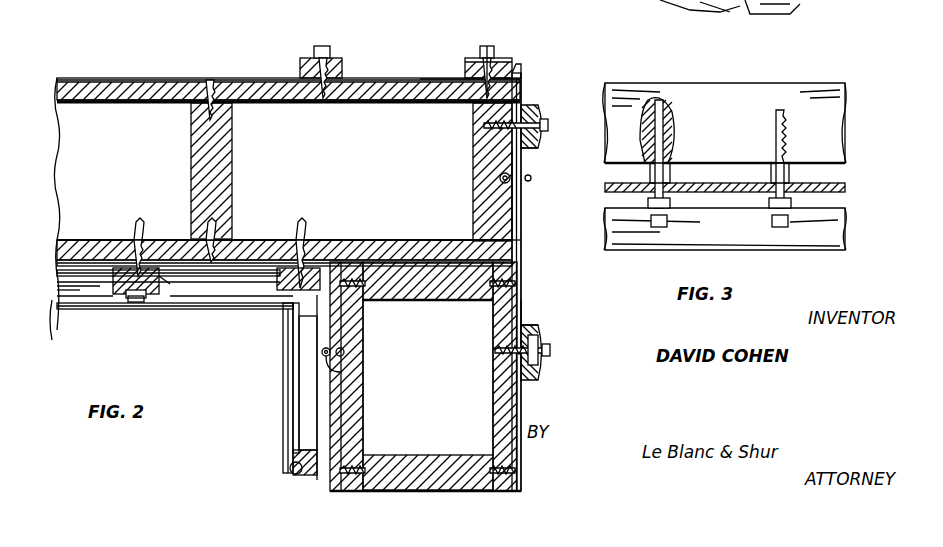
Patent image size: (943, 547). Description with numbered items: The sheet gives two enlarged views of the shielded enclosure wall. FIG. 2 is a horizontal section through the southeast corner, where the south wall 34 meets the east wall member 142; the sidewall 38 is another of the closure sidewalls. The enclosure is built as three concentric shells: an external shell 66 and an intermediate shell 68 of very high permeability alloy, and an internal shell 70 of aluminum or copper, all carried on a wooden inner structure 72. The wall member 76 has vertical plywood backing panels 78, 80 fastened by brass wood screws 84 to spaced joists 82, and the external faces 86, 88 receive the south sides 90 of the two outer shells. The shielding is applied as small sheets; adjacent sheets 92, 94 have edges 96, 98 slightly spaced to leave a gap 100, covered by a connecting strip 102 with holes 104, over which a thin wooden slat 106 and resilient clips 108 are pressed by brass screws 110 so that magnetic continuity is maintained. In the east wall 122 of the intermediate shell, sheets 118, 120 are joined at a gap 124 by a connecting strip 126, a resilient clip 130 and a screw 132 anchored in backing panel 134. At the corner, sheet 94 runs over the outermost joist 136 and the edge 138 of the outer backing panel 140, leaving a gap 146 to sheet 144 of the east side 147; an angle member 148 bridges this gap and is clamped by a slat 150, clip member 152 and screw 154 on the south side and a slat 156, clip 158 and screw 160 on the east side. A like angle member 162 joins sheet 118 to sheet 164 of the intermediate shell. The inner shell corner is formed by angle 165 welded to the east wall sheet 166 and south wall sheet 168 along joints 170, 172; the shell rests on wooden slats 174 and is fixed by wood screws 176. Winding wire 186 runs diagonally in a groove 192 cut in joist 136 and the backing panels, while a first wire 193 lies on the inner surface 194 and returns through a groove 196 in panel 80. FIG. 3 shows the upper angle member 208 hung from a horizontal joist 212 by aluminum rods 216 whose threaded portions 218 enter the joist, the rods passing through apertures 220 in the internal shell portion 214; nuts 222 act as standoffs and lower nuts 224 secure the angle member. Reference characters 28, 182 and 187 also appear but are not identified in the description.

In FIG. 2, the panel assembly 28 is at (118, 280).
In FIG. 2, the south wall 34 is at (275, 418).
In FIG. 2, the closure sidewall 38 is at (360, 70).
In FIG. 2, the external shell 66 is at (111, 74).
In FIG. 2, the intermediate shell 68 is at (184, 260).
In FIG. 2, the internal shell 70 is at (140, 296).
In FIG. 2, the wooden inner structure 72 is at (364, 169).
In FIG. 2, the wall member 76 is at (436, 381).
In FIG. 2, the vertical backing panel 78 is at (496, 387).
In FIG. 2, the vertical backing panel 80 is at (364, 325).
In FIG. 2, the joists 82 is at (436, 292).
In FIG. 2, the brass wood screws 84 is at (470, 464).
In FIG. 2, the external face 86 is at (516, 410).
In FIG. 2, the external face 88 is at (365, 397).
In FIG. 2, the south side 90 is at (522, 214).
In FIG. 2, the sheet 92 is at (522, 471).
In FIG. 2, the sheet 94 is at (521, 242).
In FIG. 2, the edge 96 is at (500, 358).
In FIG. 2, the edge 98 is at (494, 332).
In FIG. 2, the gap 100 is at (494, 345).
In FIG. 2, the vertical connecting strip 102 is at (521, 300).
In FIG. 2, the holes 104 is at (538, 372).
In FIG. 2, the wooden slat 106 is at (524, 324).
In FIG. 2, the resilient clips 108 is at (538, 338).
In FIG. 2, the brass screw 110 is at (550, 347).
In FIG. 2, the sheet 118 is at (270, 262).
In FIG. 2, the sheet 120 is at (72, 268).
In FIG. 2, the east wall 122 is at (96, 258).
In FIG. 2, the gap 124 is at (146, 260).
In FIG. 2, the connecting strip 126 is at (166, 286).
In FIG. 2, the resilient clip 130 is at (148, 300).
In FIG. 2, the screw 132 is at (118, 298).
In FIG. 2, the plywood backing panel 134 is at (336, 240).
In FIG. 2, the vertical joists 136 is at (233, 154).
In FIG. 2, the edge 138 is at (521, 90).
In FIG. 2, the outer backing panel 140 is at (404, 92).
In FIG. 2, the east wall member 142 is at (256, 76).
In FIG. 2, the sheet 144 is at (396, 76).
In FIG. 2, the gap 146 is at (521, 72).
In FIG. 2, the east side 147 is at (193, 76).
In FIG. 2, the angle member 148 is at (462, 78).
In FIG. 2, the vertical wooden slat 150 is at (538, 150).
In FIG. 2, the resilient clip member 152 is at (538, 112).
In FIG. 2, the brass screw 154 is at (548, 126).
In FIG. 2, the wooden slat 156 is at (510, 62).
In FIG. 2, the clip 158 is at (466, 56).
In FIG. 2, the screw 160 is at (492, 50).
In FIG. 2, the angle member 162 is at (286, 262).
In FIG. 2, the sheet 164 is at (322, 416).
In FIG. 2, the angle 165 is at (270, 316).
In FIG. 2, the east wall sheet 166 is at (88, 310).
In FIG. 2, the south wall sheet 168 is at (298, 440).
In FIG. 2, the welded joint 170 is at (196, 310).
In FIG. 2, the welded joint 172 is at (300, 408).
In FIG. 2, the wooden slats 174 is at (300, 472).
In FIG. 2, the wood screws 176 is at (294, 462).
In FIG. 3, the fragment 182 is at (700, 9).
In FIG. 2, the wire 186 is at (510, 176).
In FIG. 3, the fragment 187 is at (774, 9).
In FIG. 2, the groove 192 is at (500, 182).
In FIG. 2, the first wire 193 is at (364, 373).
In FIG. 2, the inner surface 194 is at (364, 446).
In FIG. 2, the groove 196 is at (364, 349).
In FIG. 3, the upper angle member 208 is at (834, 236).
In FIG. 3, the horizontal joist 212 is at (834, 130).
In FIG. 3, the portion of internal shell 214 is at (846, 188).
In FIG. 3, the aluminum rods 216 is at (668, 148).
In FIG. 3, the threaded portions 218 is at (780, 116).
In FIG. 3, the aperture 220 is at (770, 182).
In FIG. 3, the nuts 222 is at (768, 204).
In FIG. 3, the lower nuts 224 is at (772, 226).